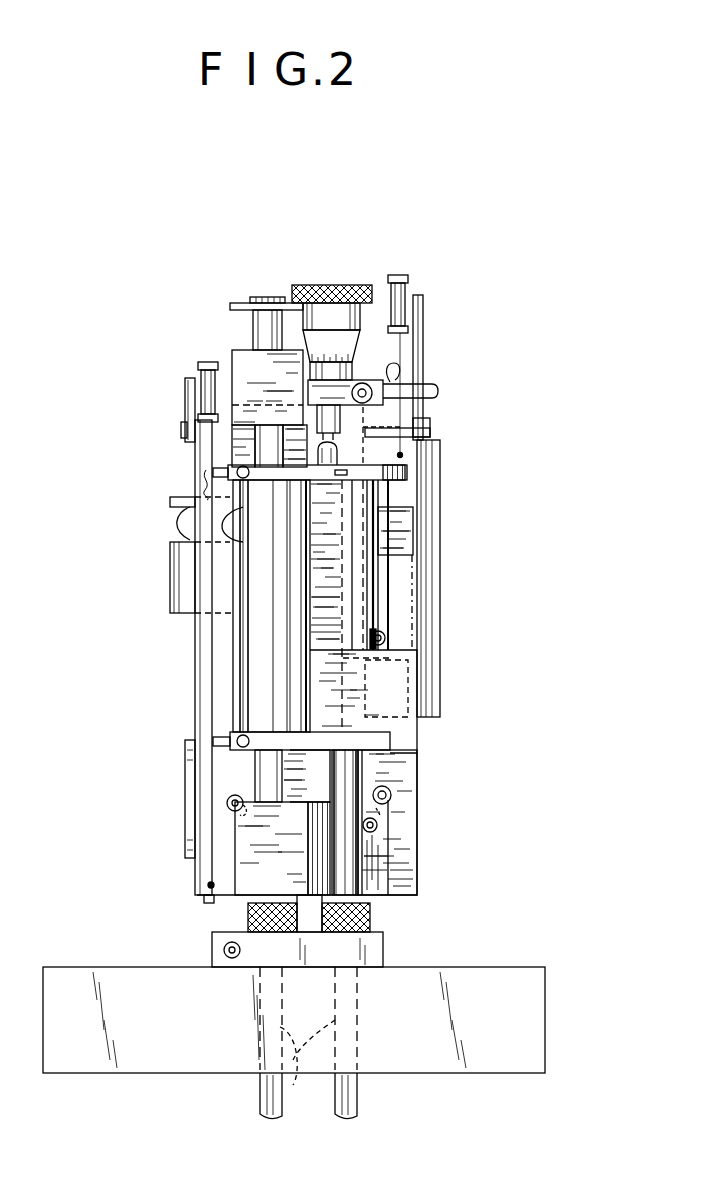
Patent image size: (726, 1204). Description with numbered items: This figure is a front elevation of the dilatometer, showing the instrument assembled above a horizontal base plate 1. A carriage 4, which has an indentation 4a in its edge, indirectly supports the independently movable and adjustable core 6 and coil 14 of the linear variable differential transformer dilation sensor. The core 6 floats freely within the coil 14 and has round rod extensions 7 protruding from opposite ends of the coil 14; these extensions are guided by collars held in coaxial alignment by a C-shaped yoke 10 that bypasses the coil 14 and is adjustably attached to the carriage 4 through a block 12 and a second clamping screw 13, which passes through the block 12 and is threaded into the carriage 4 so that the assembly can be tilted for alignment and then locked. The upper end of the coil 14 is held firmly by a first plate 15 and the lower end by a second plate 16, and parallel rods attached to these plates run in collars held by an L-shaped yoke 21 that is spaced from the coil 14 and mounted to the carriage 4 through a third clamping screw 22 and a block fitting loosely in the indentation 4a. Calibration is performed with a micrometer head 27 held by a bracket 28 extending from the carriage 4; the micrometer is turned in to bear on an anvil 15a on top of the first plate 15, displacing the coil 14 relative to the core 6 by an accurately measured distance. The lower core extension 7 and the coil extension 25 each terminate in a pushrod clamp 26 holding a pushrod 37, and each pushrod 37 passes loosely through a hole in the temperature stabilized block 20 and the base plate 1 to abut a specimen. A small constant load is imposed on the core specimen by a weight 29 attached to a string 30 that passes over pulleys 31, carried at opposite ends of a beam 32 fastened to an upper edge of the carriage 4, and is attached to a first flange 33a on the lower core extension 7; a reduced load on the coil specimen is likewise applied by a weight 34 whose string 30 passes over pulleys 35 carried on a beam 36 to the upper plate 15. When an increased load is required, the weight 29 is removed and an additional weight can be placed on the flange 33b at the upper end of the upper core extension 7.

The base plate 1 is at (510, 1058).
The carriage 4 is at (183, 742).
The indentation 4a is at (398, 557).
The core 6 is at (62, 593).
The rod extensions 7 is at (260, 327).
The C-shaped yoke 10 is at (240, 360).
The block 12 is at (380, 850).
The second clamping screw 13 is at (378, 823).
The coil 14 is at (255, 652).
The first plate 15 is at (440, 477).
The anvil 15a is at (336, 458).
The second plate 16 is at (340, 689).
The temperature stabilized block 20 is at (385, 950).
The L-shaped yoke 21 is at (378, 678).
The third clamping screw 22 is at (385, 632).
The coil extension 25 is at (345, 775).
The pushrod clamp 26 is at (245, 918).
The micrometer head 27 is at (340, 287).
The bracket 28 is at (350, 388).
The weight 29 is at (178, 540).
The string 30 is at (212, 630).
The pulleys 31 is at (200, 370).
The beam 32 is at (185, 405).
The first flange 33a is at (208, 902).
The flange 33b is at (238, 302).
The weight 34 is at (428, 520).
The pulleys 35 is at (408, 283).
The beam 36 is at (425, 323).
The pushrod 37 is at (290, 1080).